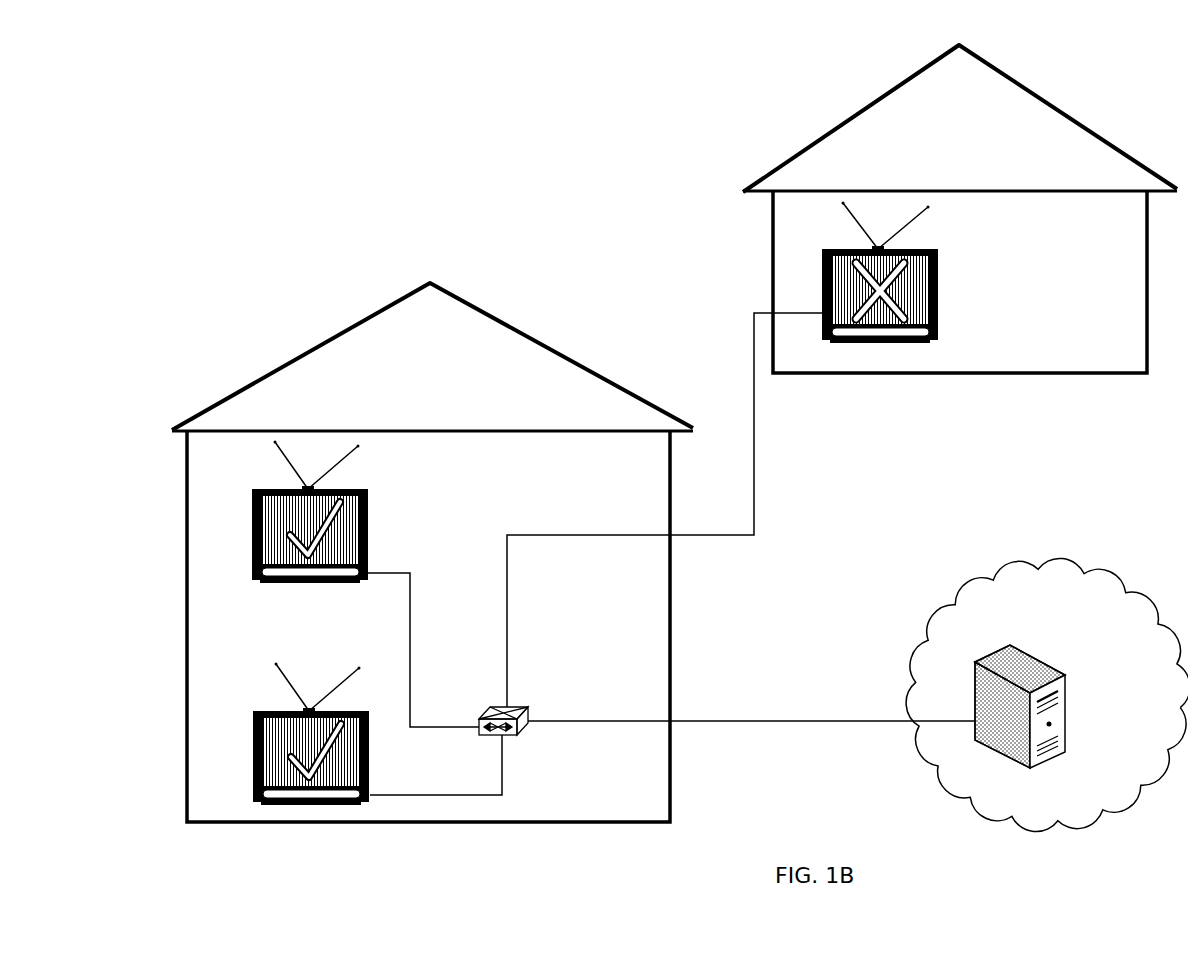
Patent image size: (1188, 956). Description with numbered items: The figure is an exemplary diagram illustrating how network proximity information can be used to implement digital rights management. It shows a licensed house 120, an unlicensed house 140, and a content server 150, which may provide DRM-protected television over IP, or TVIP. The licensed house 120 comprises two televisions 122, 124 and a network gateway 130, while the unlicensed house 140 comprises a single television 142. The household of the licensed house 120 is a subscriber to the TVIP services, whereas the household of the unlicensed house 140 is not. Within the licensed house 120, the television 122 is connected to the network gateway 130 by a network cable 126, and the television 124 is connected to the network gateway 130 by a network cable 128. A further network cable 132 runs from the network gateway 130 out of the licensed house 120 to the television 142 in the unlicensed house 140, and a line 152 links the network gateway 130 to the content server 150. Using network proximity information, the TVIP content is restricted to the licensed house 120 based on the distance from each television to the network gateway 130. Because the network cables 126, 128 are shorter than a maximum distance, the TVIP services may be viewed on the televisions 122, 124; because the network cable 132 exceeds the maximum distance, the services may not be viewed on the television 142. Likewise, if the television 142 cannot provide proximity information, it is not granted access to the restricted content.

The licensed house 120 is at (458, 299).
The television 122 is at (368, 489).
The television 124 is at (265, 711).
The network cable 126 is at (410, 606).
The network cable 128 is at (502, 778).
The network gateway 130 is at (525, 707).
The network cable 132 is at (754, 484).
The unlicensed house 140 is at (1030, 89).
The television 142 is at (938, 250).
The content server 150 is at (1012, 648).
The connection line from router to server / network 152 is at (750, 719).